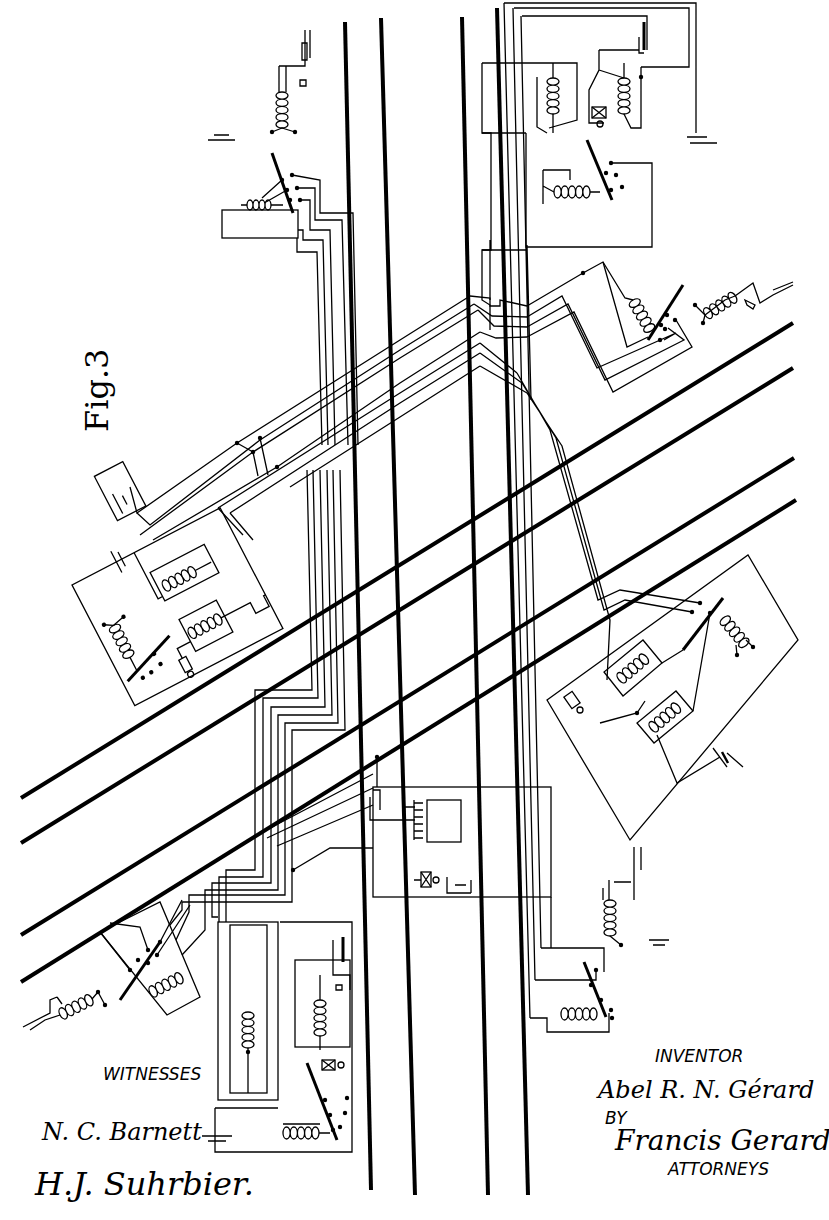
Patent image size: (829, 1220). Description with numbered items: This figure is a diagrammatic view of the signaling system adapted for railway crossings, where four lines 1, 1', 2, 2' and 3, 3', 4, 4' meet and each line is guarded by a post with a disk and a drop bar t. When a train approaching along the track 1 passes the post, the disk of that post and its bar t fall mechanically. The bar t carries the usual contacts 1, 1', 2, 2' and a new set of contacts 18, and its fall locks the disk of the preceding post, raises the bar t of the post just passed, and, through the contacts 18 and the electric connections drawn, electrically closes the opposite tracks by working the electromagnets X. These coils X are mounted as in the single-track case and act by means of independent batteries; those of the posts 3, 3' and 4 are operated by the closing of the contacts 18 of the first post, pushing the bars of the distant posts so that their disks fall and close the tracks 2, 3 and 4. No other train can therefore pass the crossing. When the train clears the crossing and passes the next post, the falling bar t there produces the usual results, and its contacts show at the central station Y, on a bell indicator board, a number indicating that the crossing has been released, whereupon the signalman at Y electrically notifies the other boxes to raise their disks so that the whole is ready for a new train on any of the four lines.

The track 1 is at (398, 606).
The post 1' is at (360, 606).
The track 2 is at (390, 606).
The contact 2' is at (441, 601).
The track 3 is at (407, 573).
The post 3' is at (407, 605).
The track 4 is at (413, 732).
The track 4' is at (407, 696).
The contact 18 is at (322, 1098).
The electromagnet X is at (553, 63).
The central station Y is at (463, 858).
The bar t is at (238, 163).